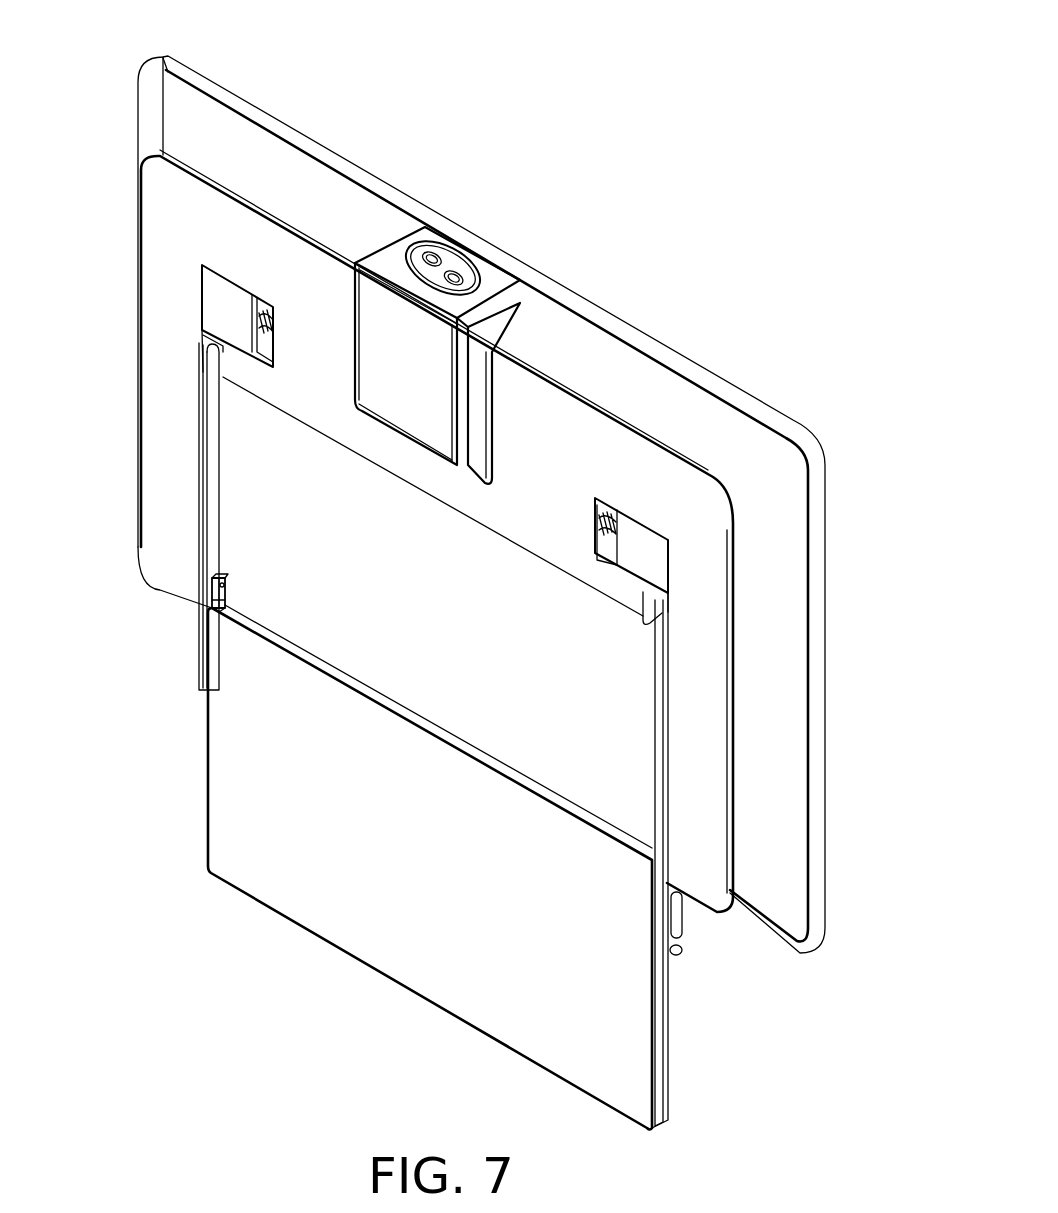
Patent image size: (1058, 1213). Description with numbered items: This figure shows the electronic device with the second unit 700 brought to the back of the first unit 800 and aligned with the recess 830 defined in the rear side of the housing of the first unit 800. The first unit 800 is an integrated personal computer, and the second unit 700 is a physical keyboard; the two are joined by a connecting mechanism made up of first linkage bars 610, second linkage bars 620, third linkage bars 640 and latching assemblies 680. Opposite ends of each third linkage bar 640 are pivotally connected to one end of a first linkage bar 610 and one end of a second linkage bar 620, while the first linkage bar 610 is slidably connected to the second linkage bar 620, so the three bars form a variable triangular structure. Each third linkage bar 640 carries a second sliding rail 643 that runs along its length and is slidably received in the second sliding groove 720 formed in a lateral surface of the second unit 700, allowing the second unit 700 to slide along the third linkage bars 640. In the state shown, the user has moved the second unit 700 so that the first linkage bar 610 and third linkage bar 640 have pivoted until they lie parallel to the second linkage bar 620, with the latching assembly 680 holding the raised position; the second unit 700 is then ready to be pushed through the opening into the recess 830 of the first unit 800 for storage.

The first unit 800 is at (578, 358).
The recess 830 is at (287, 537).
The latching assembly 680 is at (223, 298).
The first linkage bar 610 is at (213, 337).
The second linkage bar 620 is at (230, 445).
The third linkage bar 640 is at (213, 598).
The second sliding rail 643 is at (207, 607).
The second unit 700 is at (252, 777).
The second sliding groove 720 is at (665, 1048).